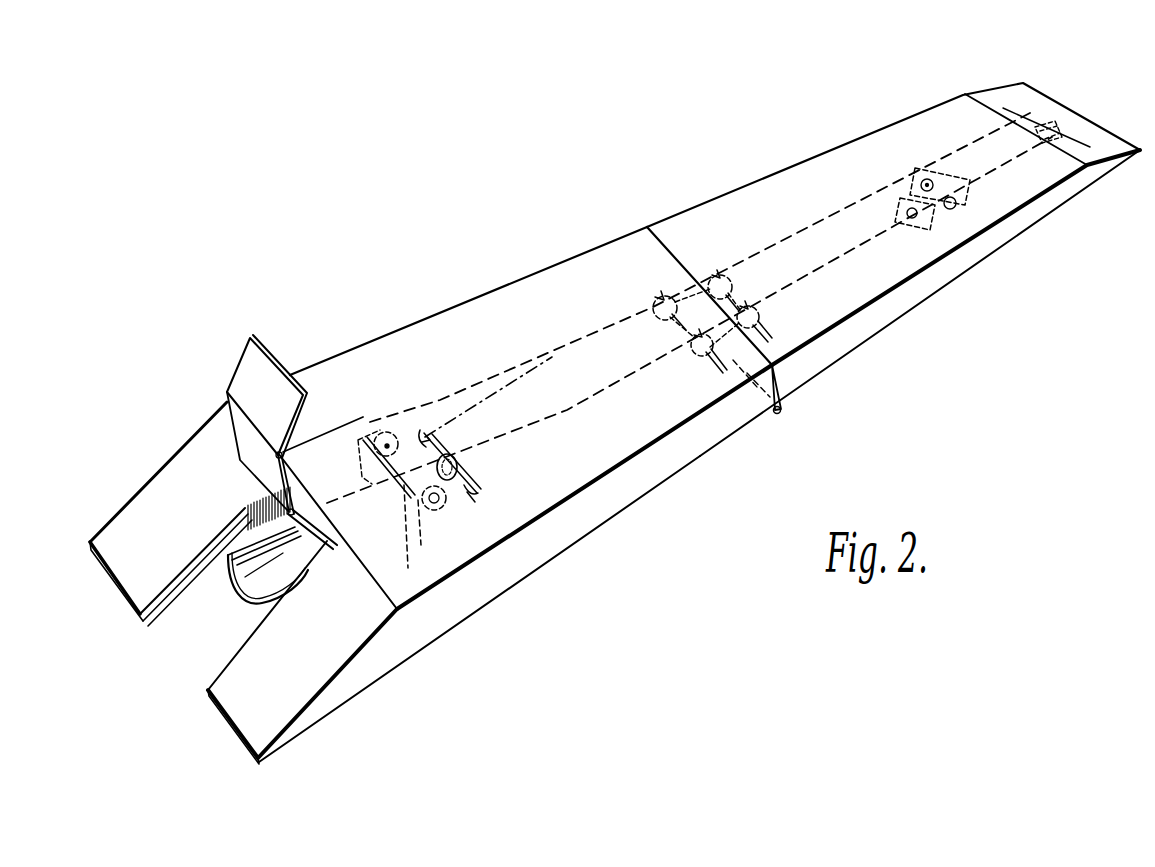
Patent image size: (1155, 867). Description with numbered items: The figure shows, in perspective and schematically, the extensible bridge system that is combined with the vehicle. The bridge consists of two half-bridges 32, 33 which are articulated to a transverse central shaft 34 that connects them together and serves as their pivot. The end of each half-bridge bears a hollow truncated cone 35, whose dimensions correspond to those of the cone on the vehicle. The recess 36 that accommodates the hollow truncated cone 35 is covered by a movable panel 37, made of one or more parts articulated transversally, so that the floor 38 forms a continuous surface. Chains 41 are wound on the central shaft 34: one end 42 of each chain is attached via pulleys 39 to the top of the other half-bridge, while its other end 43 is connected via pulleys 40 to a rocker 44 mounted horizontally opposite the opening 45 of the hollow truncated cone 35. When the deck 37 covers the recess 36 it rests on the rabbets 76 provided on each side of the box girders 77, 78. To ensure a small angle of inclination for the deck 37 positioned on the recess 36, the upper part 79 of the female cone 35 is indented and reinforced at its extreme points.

The half-bridge 32 is at (593, 521).
The half-bridge 33 is at (941, 295).
The transverse central shaft 34 is at (783, 411).
The hollow truncated cone 35 is at (331, 503).
The recess 36 is at (176, 616).
The movable panel 37 is at (241, 353).
The floor 38 is at (413, 602).
The pulleys 39 is at (671, 299).
The pulleys 40 is at (390, 424).
The chains 41 is at (552, 367).
The chain end 42 is at (725, 272).
The chain end 43 is at (427, 420).
The rocker 44 is at (458, 434).
The opening 45 is at (951, 137).
The rabbets 76 is at (195, 566).
The box girder 77 is at (190, 438).
The box girder 78 is at (346, 698).
The upper part 79 is at (254, 540).